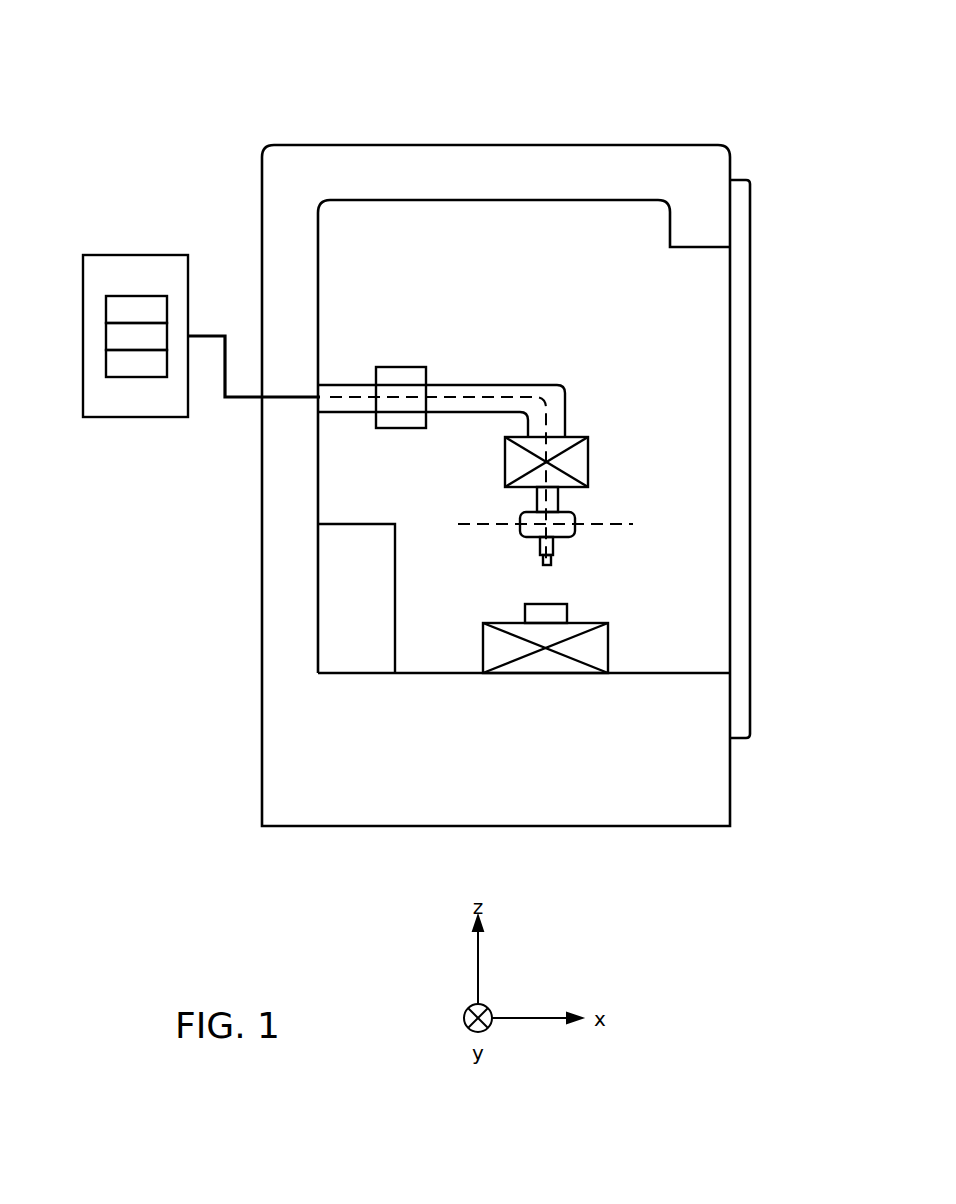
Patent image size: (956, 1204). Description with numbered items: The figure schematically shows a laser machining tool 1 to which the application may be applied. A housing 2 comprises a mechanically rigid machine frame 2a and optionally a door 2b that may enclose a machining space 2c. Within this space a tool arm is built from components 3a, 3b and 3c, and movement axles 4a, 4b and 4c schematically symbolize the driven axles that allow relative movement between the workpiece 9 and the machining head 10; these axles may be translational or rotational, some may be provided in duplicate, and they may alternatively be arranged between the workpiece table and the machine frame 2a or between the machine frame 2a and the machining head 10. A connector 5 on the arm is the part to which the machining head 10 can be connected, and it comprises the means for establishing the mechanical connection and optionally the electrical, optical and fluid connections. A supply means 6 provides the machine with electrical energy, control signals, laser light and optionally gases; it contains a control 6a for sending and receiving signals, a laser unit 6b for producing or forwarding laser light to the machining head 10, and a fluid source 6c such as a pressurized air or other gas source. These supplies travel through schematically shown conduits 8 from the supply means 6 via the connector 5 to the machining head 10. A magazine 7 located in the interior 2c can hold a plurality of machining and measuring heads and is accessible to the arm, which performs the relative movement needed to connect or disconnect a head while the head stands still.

The laser machining tool 1 is at (586, 104).
The housing 2 is at (371, 810).
The machine frame 2a is at (413, 165).
The door 2b is at (746, 474).
The machining space 2c is at (675, 322).
The tool arm component 3a is at (560, 401).
The tool arm component 3b is at (556, 500).
The tool arm component 3c is at (342, 393).
The movement axle 4a is at (605, 648).
The movement axle 4b is at (413, 373).
The movement axle 4c is at (583, 452).
The connector 5 is at (566, 520).
The supply means 6 is at (130, 263).
The control 6a is at (107, 306).
The laser unit 6b is at (107, 337).
The fluid source 6c is at (107, 367).
The magazine 7 is at (337, 583).
The conduits 8 is at (240, 399).
The workpiece 9 is at (530, 613).
The machining head 10 is at (583, 528).